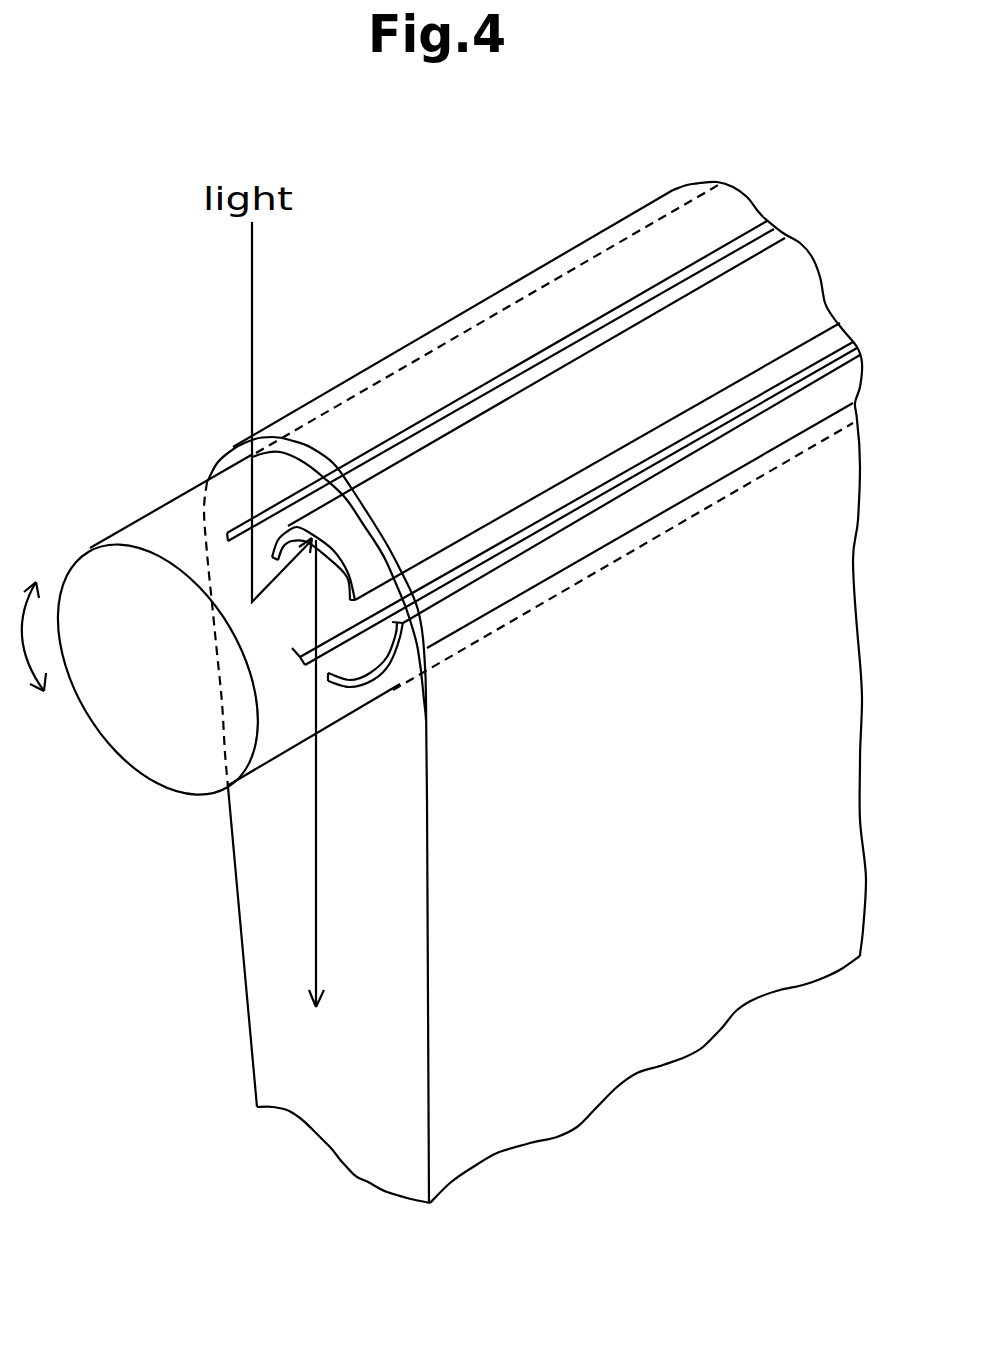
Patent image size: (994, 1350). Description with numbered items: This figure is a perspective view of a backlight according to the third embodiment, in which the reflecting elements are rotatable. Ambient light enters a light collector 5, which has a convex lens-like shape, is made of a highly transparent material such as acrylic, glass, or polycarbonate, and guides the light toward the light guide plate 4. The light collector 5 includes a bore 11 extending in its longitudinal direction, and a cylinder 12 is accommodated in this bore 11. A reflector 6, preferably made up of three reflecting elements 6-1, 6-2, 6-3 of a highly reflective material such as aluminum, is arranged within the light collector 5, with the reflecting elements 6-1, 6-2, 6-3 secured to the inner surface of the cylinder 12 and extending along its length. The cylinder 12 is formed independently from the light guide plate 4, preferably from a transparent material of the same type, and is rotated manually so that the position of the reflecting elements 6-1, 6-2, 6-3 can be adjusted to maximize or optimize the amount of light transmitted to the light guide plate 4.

The light guide plate 4 is at (835, 786).
The light collector 5 is at (502, 332).
The reflector 6 is at (543, 508).
The reflecting element 6-1 is at (660, 398).
The reflecting element 6-2 is at (333, 618).
The reflecting element 6-3 is at (517, 577).
The bore 11 is at (357, 522).
The cylinder 12 is at (140, 533).